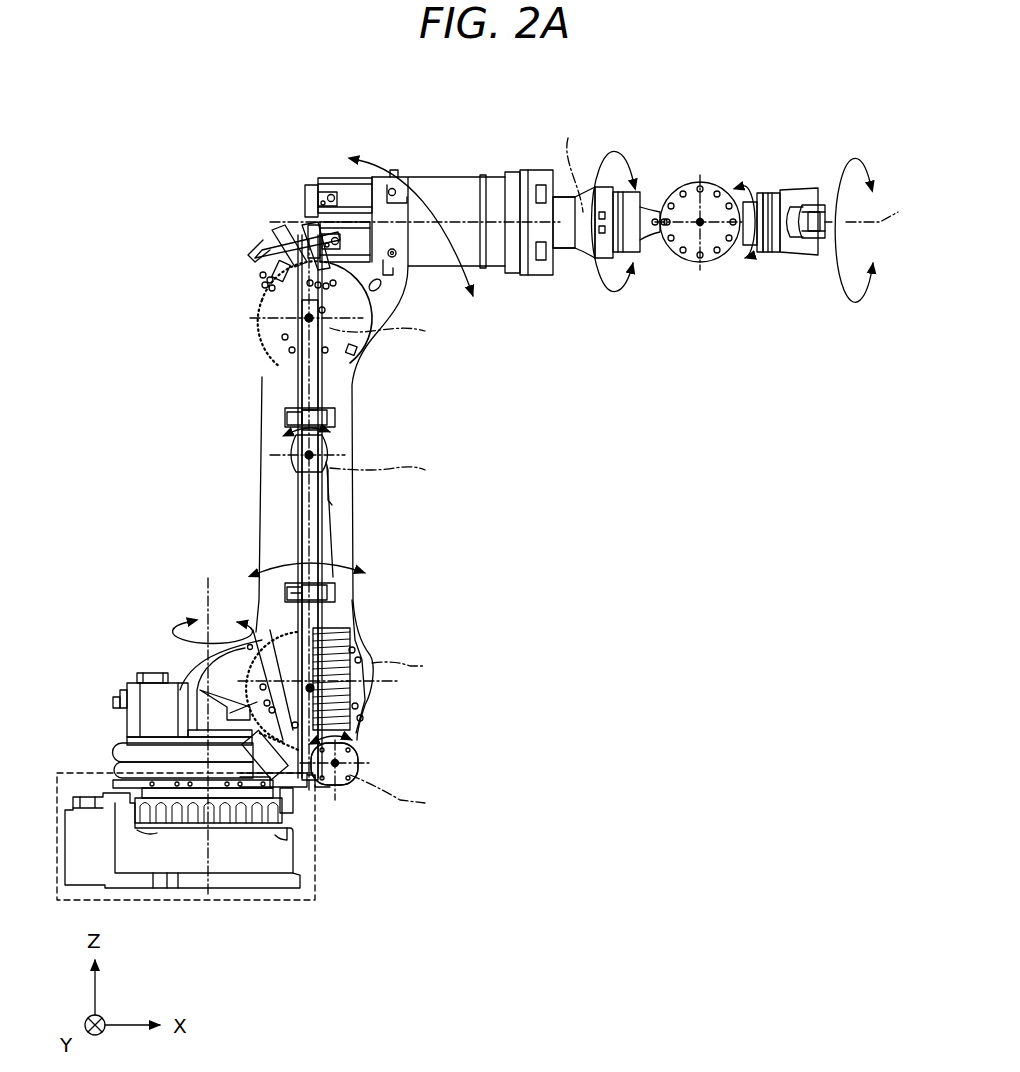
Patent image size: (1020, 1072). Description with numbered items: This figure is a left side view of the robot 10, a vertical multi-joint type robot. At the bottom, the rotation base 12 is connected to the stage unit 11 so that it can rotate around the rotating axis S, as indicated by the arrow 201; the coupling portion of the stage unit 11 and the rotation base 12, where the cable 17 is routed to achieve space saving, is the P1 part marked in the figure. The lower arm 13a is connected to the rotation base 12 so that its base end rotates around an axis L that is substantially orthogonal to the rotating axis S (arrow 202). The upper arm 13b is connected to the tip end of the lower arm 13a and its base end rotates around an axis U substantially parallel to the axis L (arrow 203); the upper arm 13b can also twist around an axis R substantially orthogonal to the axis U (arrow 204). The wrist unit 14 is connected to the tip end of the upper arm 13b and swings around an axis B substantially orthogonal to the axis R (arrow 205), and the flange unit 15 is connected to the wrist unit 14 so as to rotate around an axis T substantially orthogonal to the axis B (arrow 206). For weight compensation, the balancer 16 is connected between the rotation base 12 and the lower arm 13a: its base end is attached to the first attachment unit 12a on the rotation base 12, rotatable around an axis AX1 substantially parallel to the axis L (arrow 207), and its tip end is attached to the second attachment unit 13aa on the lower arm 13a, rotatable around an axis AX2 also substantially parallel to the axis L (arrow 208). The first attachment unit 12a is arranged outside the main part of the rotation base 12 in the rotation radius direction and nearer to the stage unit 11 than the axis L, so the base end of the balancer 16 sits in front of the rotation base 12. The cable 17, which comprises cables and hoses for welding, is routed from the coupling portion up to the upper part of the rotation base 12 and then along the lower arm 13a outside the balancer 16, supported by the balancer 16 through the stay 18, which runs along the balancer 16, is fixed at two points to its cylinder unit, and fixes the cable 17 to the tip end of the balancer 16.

The robot 10 is at (246, 121).
The stage unit 11 is at (277, 857).
The rotation base 12 is at (290, 782).
The first attachment unit 12a is at (360, 760).
The lower arm 13a is at (345, 502).
The second attachment unit 13aa is at (332, 444).
The upper arm 13b is at (565, 258).
The wrist unit 14 is at (747, 250).
The flange unit 15 is at (795, 242).
The balancer 16 is at (347, 612).
The cable 17 is at (305, 377).
The stay 18 is at (295, 502).
The arrow 201 is at (175, 625).
The arrow 202 is at (350, 580).
The arrow 203 is at (398, 160).
The arrow 204 is at (632, 176).
The arrow 205 is at (741, 180).
The arrow 206 is at (868, 178).
The arrow 207 is at (358, 722).
The arrow 208 is at (290, 414).
The axis AX1 is at (401, 777).
The axis AX2 is at (369, 468).
The rotating axis S is at (205, 590).
The axis L is at (339, 667).
The axis U is at (347, 332).
The axis R is at (572, 163).
The axis B is at (700, 262).
The axis T is at (869, 213).
The P1 part P1 is at (68, 772).